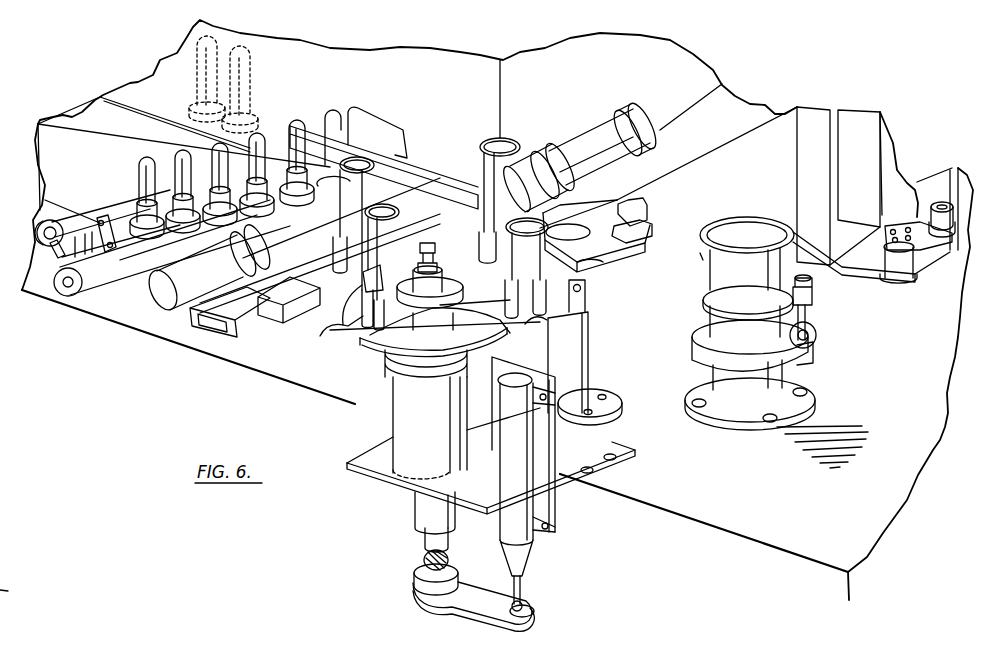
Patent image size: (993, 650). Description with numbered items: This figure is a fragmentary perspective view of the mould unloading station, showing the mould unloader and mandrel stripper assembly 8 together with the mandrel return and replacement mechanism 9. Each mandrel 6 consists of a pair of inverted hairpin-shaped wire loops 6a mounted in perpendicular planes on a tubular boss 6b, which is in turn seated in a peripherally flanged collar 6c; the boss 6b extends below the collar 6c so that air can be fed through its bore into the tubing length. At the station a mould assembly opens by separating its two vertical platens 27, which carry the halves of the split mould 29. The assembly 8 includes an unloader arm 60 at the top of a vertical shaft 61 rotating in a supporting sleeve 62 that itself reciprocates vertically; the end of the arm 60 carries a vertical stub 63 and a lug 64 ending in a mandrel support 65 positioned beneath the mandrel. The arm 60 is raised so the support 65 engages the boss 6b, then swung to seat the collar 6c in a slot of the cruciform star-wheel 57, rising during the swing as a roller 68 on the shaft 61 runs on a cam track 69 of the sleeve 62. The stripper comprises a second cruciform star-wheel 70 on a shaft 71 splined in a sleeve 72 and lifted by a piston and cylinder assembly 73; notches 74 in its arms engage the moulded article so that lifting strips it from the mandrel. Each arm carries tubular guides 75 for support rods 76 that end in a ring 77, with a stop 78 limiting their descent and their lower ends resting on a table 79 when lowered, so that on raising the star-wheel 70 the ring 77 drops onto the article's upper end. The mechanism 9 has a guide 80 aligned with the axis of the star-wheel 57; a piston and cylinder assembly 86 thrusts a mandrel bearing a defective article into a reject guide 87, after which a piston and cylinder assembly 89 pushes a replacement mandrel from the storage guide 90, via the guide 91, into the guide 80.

The mandrel 6 is at (246, 92).
The wire loops 6a is at (140, 177).
The tubular boss 6b is at (136, 211).
The peripherally flanged collar 6c is at (147, 236).
The mould unloader and mandrel stripper assembly 8 is at (708, 492).
The mandrel return and replacement mechanism 9 is at (413, 155).
The platens 27 is at (803, 150).
The split mould 29 is at (857, 133).
The cruciform star-wheel 57 is at (620, 216).
The unloader arm 60 is at (842, 270).
The vertical shaft 61 is at (723, 276).
The supporting sleeve 62 is at (722, 382).
The vertical stub 63 is at (902, 266).
The lug 64 is at (923, 238).
The mandrel support 65 is at (942, 200).
The roller 68 is at (818, 334).
The cam track 69 is at (806, 352).
The cruciform star-wheel 70 is at (402, 312).
The shaft 71 is at (426, 541).
The sleeve 72 is at (420, 510).
The piston and cylinder assembly 73 is at (520, 494).
The notches 74 is at (335, 323).
The tubular guides 75 is at (583, 306).
The support rods 76 is at (630, 240).
The ring 77 is at (503, 139).
The stop 78 is at (600, 278).
The table 79 is at (440, 342).
The guide 80 is at (421, 184).
The piston and cylinder assembly 86 is at (583, 145).
The reject guide 87 is at (420, 215).
The piston and cylinder assembly 89 is at (165, 316).
The guide 90 is at (108, 272).
The guide 91 is at (362, 160).